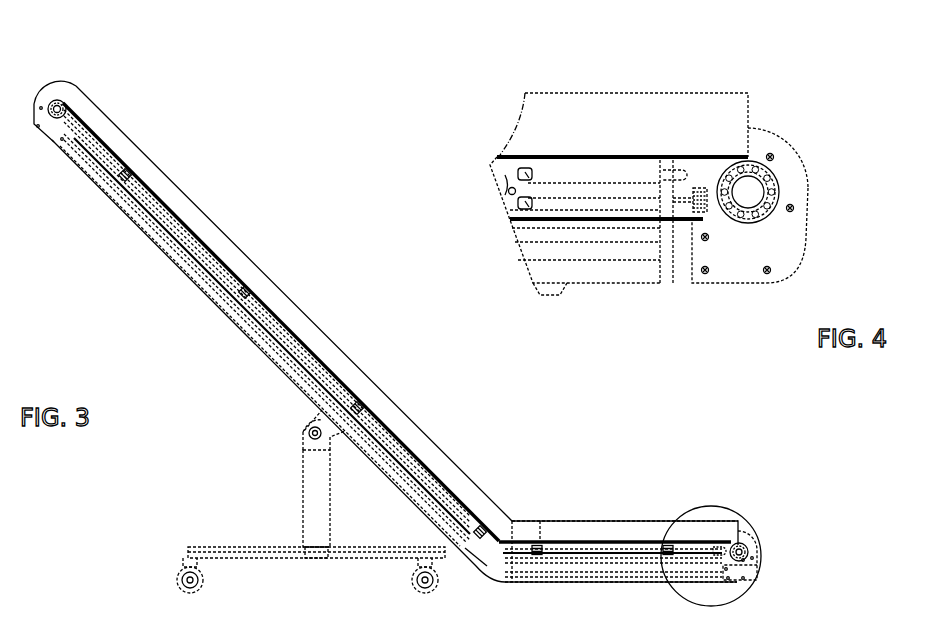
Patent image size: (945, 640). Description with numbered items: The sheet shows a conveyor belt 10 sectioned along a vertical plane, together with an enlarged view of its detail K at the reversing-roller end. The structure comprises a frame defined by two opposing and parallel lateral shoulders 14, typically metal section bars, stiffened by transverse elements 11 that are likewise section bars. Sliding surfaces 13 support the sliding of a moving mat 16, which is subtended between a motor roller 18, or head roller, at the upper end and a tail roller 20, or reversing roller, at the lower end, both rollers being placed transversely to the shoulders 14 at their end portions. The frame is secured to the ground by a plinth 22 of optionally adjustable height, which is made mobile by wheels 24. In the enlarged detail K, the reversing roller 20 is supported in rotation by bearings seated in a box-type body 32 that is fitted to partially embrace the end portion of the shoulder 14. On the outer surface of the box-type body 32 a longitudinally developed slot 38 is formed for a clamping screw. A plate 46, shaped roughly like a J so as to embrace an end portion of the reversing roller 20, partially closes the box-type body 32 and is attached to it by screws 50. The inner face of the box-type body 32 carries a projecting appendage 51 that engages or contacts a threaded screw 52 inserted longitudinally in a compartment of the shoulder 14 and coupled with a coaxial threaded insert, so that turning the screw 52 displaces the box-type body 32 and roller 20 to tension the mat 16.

In FIG. 3, the conveyor belt 10 is at (266, 178).
In FIG. 3, the transverse elements 11 is at (251, 290).
In FIG. 4, the transverse elements 11 is at (536, 172).
In FIG. 3, the sliding surfaces 13 is at (588, 550).
In FIG. 3, the lateral shoulders 14 is at (187, 276).
In FIG. 4, the lateral shoulders 14 is at (610, 252).
In FIG. 3, the moving mat 16 is at (455, 494).
In FIG. 4, the moving mat 16 is at (602, 155).
In FIG. 3, the motor roller 18 is at (70, 106).
In FIG. 3, the tail roller 20 is at (748, 557).
In FIG. 4, the tail roller 20 is at (752, 188).
In FIG. 3, the plinth 22 is at (286, 489).
In FIG. 3, the wheels 24 is at (180, 590).
In FIG. 4, the box-type body 32 is at (748, 128).
In FIG. 4, the slot 38 is at (710, 168).
In FIG. 4, the plate 46 is at (784, 243).
In FIG. 4, the screws 50 is at (794, 208).
In FIG. 4, the projecting appendage 51 is at (707, 214).
In FIG. 4, the threaded screw 52 is at (673, 284).
In FIG. 3, the detail K is at (753, 518).